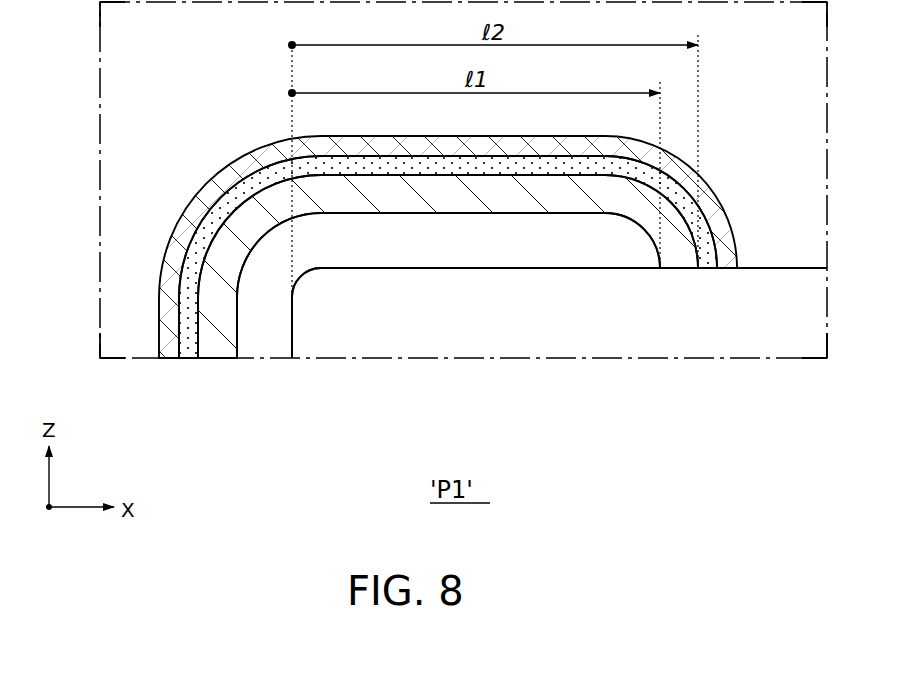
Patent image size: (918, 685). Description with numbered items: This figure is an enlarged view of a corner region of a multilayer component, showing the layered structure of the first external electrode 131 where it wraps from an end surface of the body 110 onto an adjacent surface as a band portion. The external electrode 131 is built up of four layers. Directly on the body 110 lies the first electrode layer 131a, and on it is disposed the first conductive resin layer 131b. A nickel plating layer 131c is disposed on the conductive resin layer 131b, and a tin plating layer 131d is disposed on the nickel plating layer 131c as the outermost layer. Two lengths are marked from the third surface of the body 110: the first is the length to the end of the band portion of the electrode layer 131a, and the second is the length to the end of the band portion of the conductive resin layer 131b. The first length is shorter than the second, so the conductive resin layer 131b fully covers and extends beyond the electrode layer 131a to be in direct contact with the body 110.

The body 110 is at (768, 268).
The external electrode 131 is at (417, 304).
The first electrode layer 131a is at (448, 323).
The first conductive resin layer 131b is at (215, 358).
The nickel plating layer 131c is at (195, 358).
The tin plating layer 131d is at (168, 358).